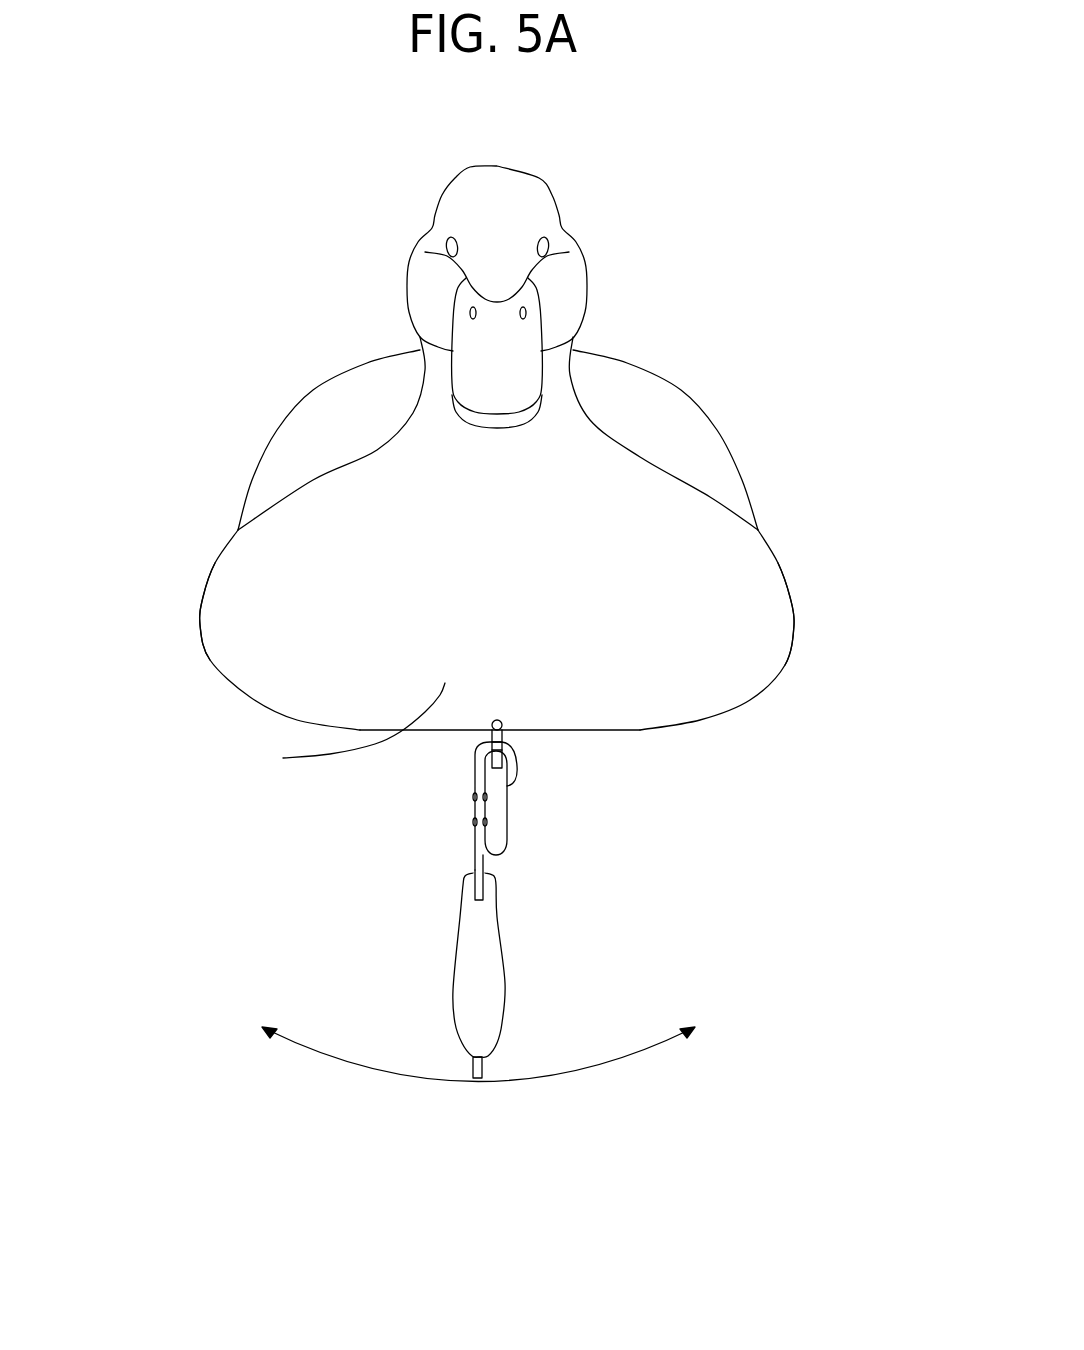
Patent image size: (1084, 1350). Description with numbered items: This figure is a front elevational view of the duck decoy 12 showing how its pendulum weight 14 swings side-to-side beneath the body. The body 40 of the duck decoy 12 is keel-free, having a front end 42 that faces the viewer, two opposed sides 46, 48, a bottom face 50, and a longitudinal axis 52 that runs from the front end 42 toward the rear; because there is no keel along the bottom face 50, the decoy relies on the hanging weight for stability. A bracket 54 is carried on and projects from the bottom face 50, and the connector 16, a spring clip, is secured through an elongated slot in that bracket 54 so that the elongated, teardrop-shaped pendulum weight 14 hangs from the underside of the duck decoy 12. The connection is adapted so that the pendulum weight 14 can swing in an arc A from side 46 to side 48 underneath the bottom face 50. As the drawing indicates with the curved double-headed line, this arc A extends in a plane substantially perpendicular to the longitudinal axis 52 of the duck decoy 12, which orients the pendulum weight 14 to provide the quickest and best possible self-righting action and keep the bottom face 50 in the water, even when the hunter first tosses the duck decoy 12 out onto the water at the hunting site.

The duck decoy 12 is at (683, 217).
The pendulum weight 14 is at (487, 970).
The connector 16 is at (476, 782).
The body 40 is at (657, 410).
The front end 42 is at (345, 727).
The side 46 is at (793, 617).
The side 48 is at (200, 623).
The bottom face 50 is at (590, 732).
The longitudinal axis 52 is at (480, 727).
The bracket 54 is at (525, 753).
The arc A is at (415, 1080).